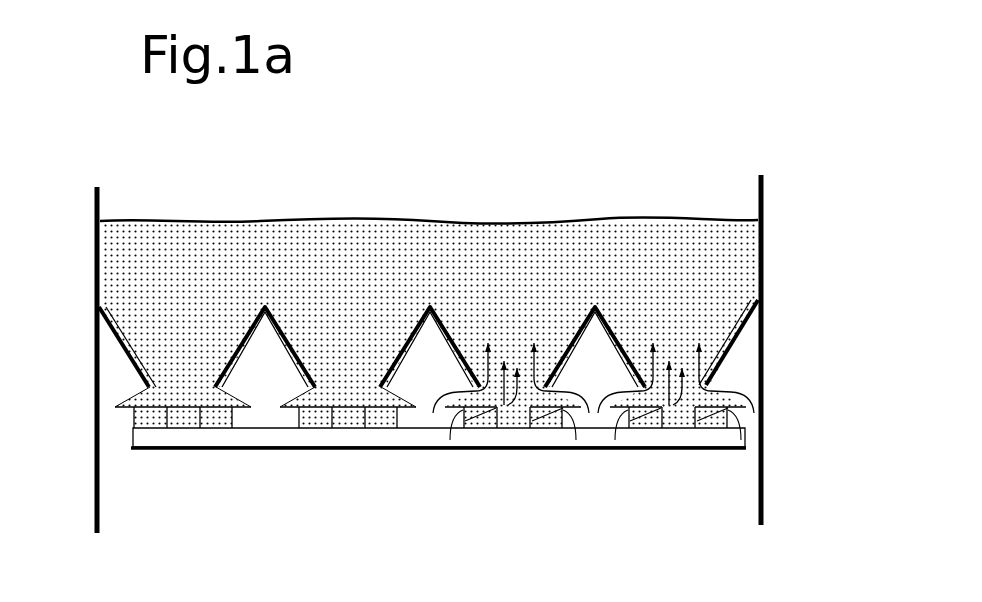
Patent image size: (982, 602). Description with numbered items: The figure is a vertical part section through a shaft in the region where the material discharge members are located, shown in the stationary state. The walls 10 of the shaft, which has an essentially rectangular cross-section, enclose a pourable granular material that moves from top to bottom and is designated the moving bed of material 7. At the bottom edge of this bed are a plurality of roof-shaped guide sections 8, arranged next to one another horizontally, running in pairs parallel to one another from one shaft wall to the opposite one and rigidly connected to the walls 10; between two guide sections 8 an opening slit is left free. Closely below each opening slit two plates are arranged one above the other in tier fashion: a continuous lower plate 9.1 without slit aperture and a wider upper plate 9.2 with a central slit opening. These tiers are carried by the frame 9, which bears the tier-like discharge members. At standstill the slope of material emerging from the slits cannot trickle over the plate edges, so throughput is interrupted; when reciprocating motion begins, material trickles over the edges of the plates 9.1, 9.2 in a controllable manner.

The moving bed of material 7 is at (682, 273).
The guide sections 8 is at (128, 358).
The frame 9 is at (513, 452).
The lower plate 9.1 is at (489, 430).
The upper plate 9.2 is at (557, 430).
The walls of a shaft 10 is at (96, 260).